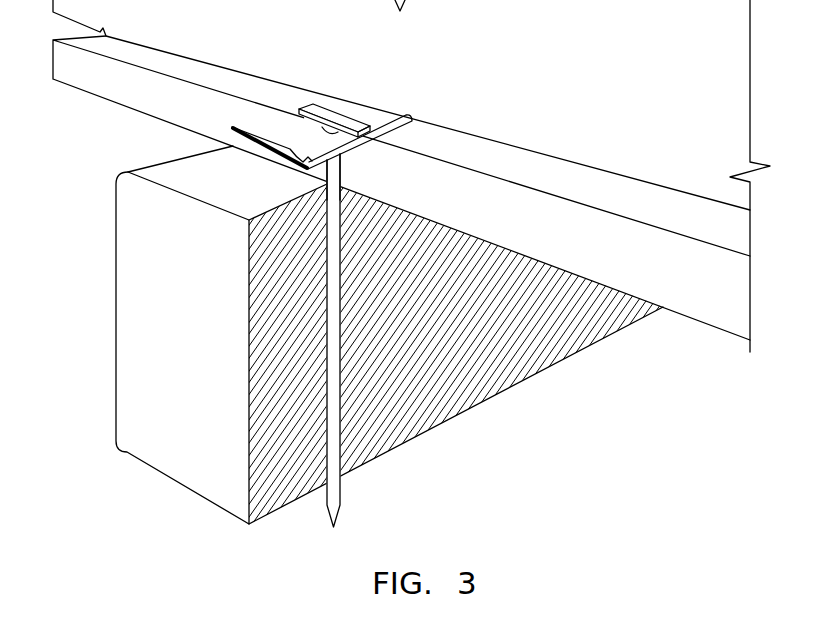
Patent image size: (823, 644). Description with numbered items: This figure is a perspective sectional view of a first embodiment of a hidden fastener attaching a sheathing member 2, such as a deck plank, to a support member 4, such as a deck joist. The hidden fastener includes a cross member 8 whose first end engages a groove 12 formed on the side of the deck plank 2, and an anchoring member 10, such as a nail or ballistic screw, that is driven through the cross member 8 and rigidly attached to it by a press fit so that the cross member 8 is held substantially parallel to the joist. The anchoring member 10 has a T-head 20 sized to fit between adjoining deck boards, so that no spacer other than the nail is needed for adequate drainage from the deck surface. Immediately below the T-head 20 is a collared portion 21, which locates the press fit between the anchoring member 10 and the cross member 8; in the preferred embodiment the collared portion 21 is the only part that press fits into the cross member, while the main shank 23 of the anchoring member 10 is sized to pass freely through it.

The sheathing member 2 is at (557, 71).
The support member 4 is at (194, 358).
The cross member 8 is at (283, 135).
The anchoring member 10 is at (337, 486).
The groove 12 is at (538, 172).
The T-head 20 is at (349, 120).
The collared portion 21 is at (330, 168).
The main shank 23 is at (335, 370).